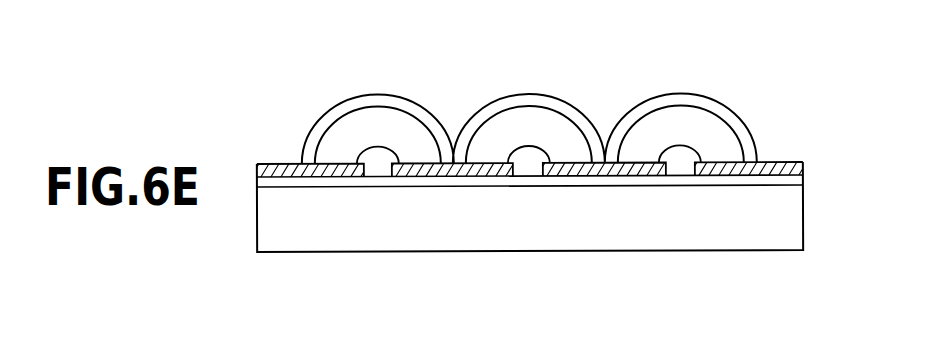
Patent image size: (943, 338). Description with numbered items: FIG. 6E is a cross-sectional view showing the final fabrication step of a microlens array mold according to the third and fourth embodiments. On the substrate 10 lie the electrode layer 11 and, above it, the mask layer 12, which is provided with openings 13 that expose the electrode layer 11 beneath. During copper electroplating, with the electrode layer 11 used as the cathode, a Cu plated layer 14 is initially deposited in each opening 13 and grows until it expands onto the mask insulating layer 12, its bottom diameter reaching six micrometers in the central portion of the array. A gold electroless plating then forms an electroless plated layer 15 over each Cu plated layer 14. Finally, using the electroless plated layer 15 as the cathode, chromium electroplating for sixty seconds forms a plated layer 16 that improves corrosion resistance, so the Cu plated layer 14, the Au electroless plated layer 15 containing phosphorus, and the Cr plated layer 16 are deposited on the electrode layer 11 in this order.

The substrate 10 is at (800, 220).
The electrode layer 11 is at (801, 178).
The mask layer 12 is at (795, 162).
The openings 13 is at (525, 172).
The Cu plated layer 14 is at (682, 150).
The electroless plated layer 15 is at (697, 120).
The Cr plated layer 16 is at (537, 100).